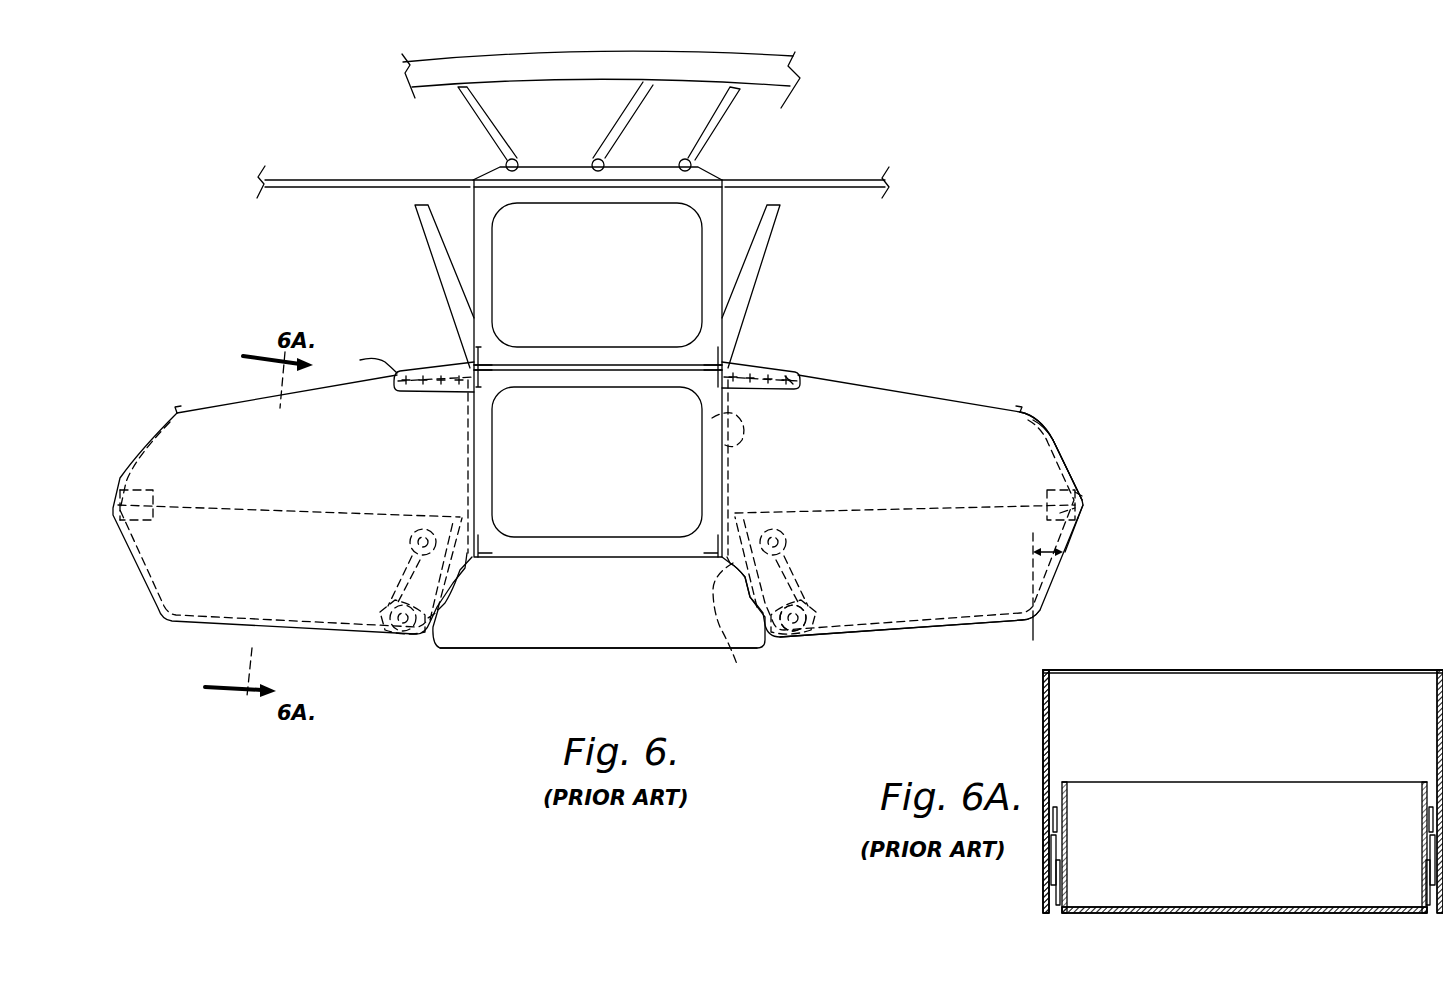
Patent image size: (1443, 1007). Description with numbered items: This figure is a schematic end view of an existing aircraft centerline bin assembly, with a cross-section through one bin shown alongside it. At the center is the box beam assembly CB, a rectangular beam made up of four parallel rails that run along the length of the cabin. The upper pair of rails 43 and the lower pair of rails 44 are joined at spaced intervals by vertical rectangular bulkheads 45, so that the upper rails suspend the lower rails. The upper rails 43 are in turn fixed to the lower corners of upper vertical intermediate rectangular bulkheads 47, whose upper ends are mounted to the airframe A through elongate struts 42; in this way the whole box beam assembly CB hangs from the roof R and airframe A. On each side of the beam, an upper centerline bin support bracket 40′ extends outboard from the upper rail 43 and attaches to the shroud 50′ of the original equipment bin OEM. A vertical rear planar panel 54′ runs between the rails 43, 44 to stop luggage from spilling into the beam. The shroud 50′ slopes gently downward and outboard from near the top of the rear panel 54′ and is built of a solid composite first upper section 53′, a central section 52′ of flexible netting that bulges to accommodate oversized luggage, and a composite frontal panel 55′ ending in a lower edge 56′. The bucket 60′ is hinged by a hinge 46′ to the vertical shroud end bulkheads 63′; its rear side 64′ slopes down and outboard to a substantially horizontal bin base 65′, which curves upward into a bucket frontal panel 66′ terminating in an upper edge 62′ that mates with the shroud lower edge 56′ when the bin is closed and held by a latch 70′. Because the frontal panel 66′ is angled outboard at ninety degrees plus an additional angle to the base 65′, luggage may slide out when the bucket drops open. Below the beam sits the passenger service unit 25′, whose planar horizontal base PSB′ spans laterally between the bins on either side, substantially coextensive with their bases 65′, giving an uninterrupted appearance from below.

In FIG. 6, the airframe A is at (717, 72).
In FIG. 6, the roof R is at (887, 189).
In FIG. 6, the elongate struts 42 is at (485, 127).
In FIG. 6, the box beam assembly CB is at (609, 466).
In FIG. 6, the upper vertical intermediate rectangular bulkheads 47 is at (712, 278).
In FIG. 6, the upper rails 43 is at (478, 365).
In FIG. 6, the vertical rectangular bulkheads 45 is at (710, 452).
In FIG. 6, the lower rails 44 is at (484, 553).
In FIG. 6, the first upper section of the shroud 53′ is at (765, 365).
In FIG. 6, the upper centerline bin support bracket 40′ is at (790, 370).
In FIG. 6, the central section of the shroud 52′ is at (885, 390).
In FIG. 6A, the central section of the shroud 52′ is at (1260, 670).
In FIG. 6, the vertical shroud end bulkheads 63′ is at (950, 412).
In FIG. 6A, the vertical shroud end bulkheads 63′ is at (1438, 705).
In FIG. 6, the frontal panel of the shroud 55′ is at (1052, 433).
In FIG. 6, the shroud 50′ is at (1112, 453).
In FIG. 6A, the shroud 50′ is at (1300, 655).
In FIG. 6, the lower edge of the shroud frontal panel 56′ is at (1082, 494).
In FIG. 6, the latch 70′ is at (1060, 513).
In FIG. 6, the upper edge of the bucket 62′ is at (1083, 515).
In FIG. 6, the bucket frontal panel 66′ is at (1073, 548).
In FIG. 6, the bucket 60′ is at (1102, 587).
In FIG. 6A, the bucket 60′ is at (1137, 920).
In FIG. 6, the bin base 65′ is at (955, 628).
In FIG. 6A, the bin base 65′ is at (1180, 910).
In FIG. 6, the hinge 46′ is at (829, 611).
In FIG. 6A, the hinge 46′ is at (1058, 779).
In FIG. 6, the rear side of the bucket 64′ is at (735, 631).
In FIG. 6A, the rear side of the bucket 64′ is at (1280, 845).
In FIG. 6, the vertical rear planar panel 54′ is at (712, 418).
In FIG. 6A, the vertical rear planar panel 54′ is at (1285, 750).
In FIG. 6, the passenger service unit 25′ is at (660, 620).
In FIG. 6, the base of the passenger service unit PSB′ is at (562, 651).
In FIG. 6, the original equipment bin OEM is at (1101, 350).